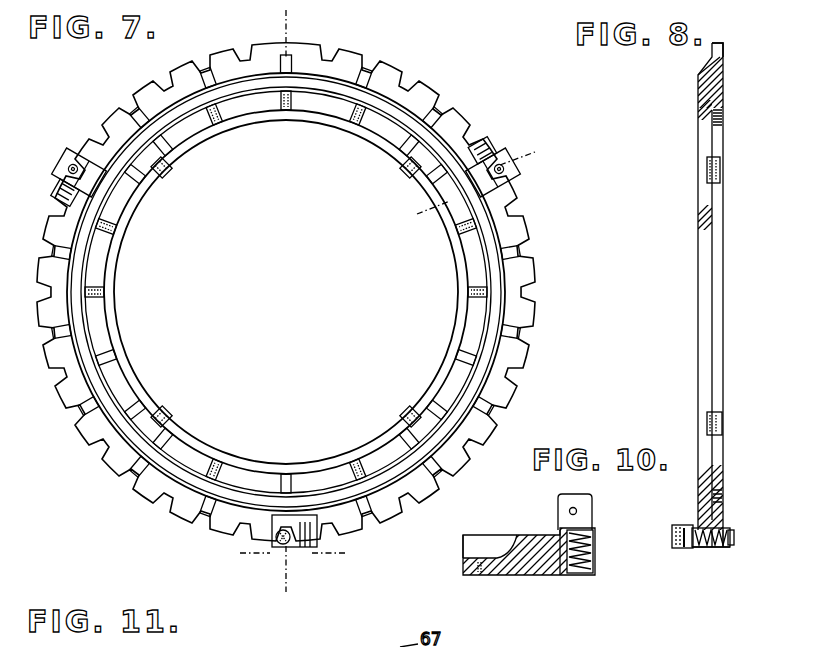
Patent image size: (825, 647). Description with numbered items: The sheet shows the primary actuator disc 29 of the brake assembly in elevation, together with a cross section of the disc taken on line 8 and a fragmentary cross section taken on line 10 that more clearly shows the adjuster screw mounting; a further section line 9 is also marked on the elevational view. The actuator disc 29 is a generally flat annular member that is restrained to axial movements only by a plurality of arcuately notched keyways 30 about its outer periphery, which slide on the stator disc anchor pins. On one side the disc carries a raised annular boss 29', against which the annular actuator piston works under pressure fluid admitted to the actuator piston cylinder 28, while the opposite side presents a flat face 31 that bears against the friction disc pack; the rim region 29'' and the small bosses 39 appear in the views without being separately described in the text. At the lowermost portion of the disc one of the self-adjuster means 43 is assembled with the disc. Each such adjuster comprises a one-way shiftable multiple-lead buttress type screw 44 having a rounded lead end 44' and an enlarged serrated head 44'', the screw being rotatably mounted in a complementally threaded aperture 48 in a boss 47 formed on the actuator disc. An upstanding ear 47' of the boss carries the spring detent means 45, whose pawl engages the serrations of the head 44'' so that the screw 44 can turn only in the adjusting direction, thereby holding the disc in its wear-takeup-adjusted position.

In FIG. 10, the actuator piston cylinder 28 is at (527, 535).
In FIG. 7, the primary actuator disc 29 is at (283, 286).
In FIG. 8, the primary actuator disc 29 is at (734, 297).
In FIG. 7, the raised annular boss 29' is at (286, 292).
In FIG. 8, the raised annular boss 29' is at (677, 70).
In FIG. 8, the rim of ring gear 29'' is at (751, 285).
In FIG. 7, the arcuately notched keyways 30 is at (128, 103).
In FIG. 8, the arcuately notched keyways 30 is at (720, 43).
In FIG. 10, the flat face 31 is at (517, 575).
In FIG. 7, the bolt boss 39 is at (166, 180).
In FIG. 8, the bolt boss 39 is at (720, 183).
In FIG. 7, the self-adjuster means 43 is at (280, 545).
In FIG. 8, the self-adjuster means 43 is at (728, 547).
In FIG. 8, the buttress type screw 44 is at (730, 522).
In FIG. 8, the rounded lead end 44' is at (757, 533).
In FIG. 8, the enlarged head 44'' is at (668, 557).
In FIG. 7, the spring detent means 45 is at (304, 546).
In FIG. 7, the boss 47 is at (290, 149).
In FIG. 8, the boss 47 is at (711, 567).
In FIG. 10, the boss 47 is at (597, 552).
In FIG. 7, the upstanding ear 47' is at (254, 157).
In FIG. 8, the upstanding ear 47' is at (671, 527).
In FIG. 10, the upstanding ear 47' is at (593, 506).
In FIG. 7, the threaded aperture 48 is at (70, 166).
In FIG. 8, the threaded aperture 48 is at (715, 550).
In FIG. 10, the threaded aperture 48 is at (593, 540).
In FIG. 7, the section line 8- 8 is at (289, 18).
In FIG. 7, the section line 9- 9 is at (250, 555).
In FIG. 7, the section line 10- 10 is at (531, 151).